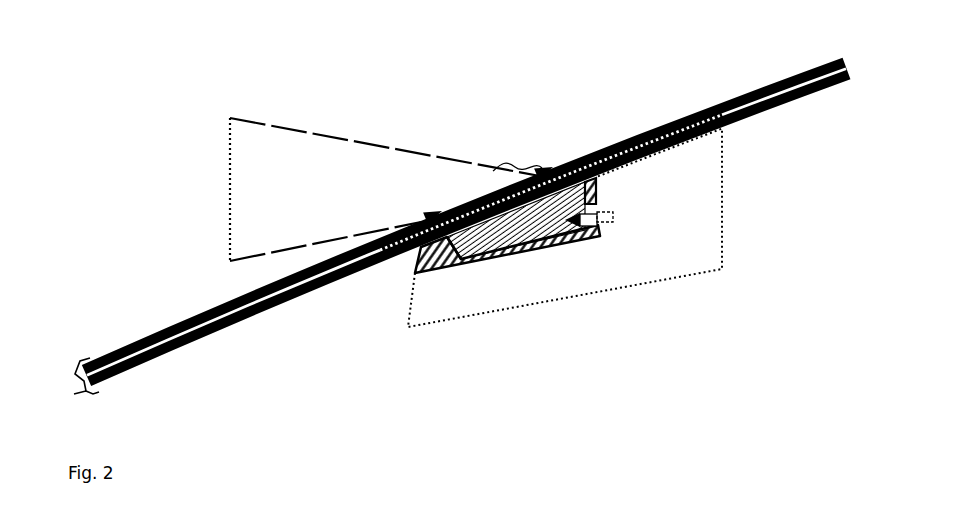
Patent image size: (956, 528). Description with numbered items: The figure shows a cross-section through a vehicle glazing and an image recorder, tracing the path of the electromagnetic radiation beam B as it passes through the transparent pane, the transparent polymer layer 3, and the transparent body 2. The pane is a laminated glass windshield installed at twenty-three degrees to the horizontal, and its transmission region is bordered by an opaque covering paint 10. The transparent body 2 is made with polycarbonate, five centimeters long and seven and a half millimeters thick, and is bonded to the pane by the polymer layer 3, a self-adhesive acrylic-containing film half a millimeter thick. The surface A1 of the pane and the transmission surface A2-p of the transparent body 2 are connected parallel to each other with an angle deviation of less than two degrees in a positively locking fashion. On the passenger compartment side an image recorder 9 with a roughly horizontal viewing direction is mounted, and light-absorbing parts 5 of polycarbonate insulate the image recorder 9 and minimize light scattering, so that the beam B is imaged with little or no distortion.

The covering paint 10 is at (632, 134).
The electromagnetic radiation beam B is at (356, 134).
The image recorder 9 is at (495, 306).
The light-absorbing parts 5 is at (428, 266).
The transparent body 2 is at (533, 212).
The transmission surface of the transparent body A2-p is at (570, 237).
The surface of the transparent pane A1 is at (426, 218).
The transparent polymer layer 3 is at (542, 168).